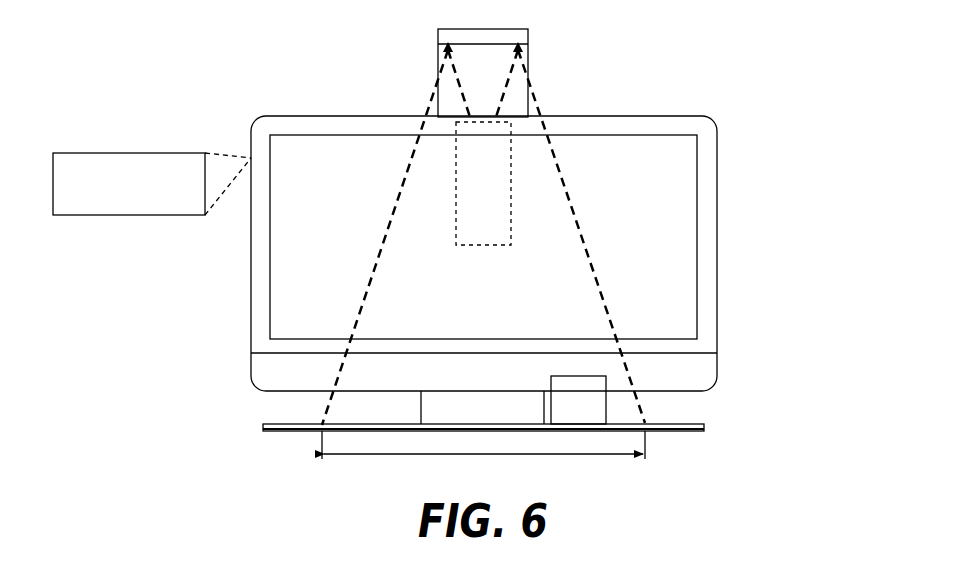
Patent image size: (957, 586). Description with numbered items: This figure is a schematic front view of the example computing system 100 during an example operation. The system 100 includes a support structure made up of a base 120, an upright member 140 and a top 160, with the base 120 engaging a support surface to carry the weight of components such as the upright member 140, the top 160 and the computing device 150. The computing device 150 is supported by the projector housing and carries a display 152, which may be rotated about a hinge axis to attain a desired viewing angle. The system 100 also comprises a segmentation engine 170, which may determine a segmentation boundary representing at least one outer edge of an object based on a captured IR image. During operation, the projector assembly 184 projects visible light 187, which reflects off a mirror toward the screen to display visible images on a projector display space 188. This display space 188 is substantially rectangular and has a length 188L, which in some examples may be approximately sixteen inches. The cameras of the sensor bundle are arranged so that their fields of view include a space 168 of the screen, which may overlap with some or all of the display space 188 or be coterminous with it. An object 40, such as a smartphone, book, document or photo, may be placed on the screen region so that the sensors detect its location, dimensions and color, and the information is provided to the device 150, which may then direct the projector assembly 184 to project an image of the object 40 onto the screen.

The computing system 100 is at (648, 68).
The base 120 is at (259, 421).
The upright member 140 is at (535, 79).
The computing device 150 is at (722, 166).
The display 152 is at (330, 174).
The top 160 is at (530, 22).
The segmentation engine 170 is at (125, 216).
The projector assembly 184 is at (454, 191).
The visible light 187 is at (433, 98).
The projector display space 188 is at (402, 237).
The space 168 is at (360, 421).
The length 188L is at (483, 460).
The object 40 is at (591, 372).